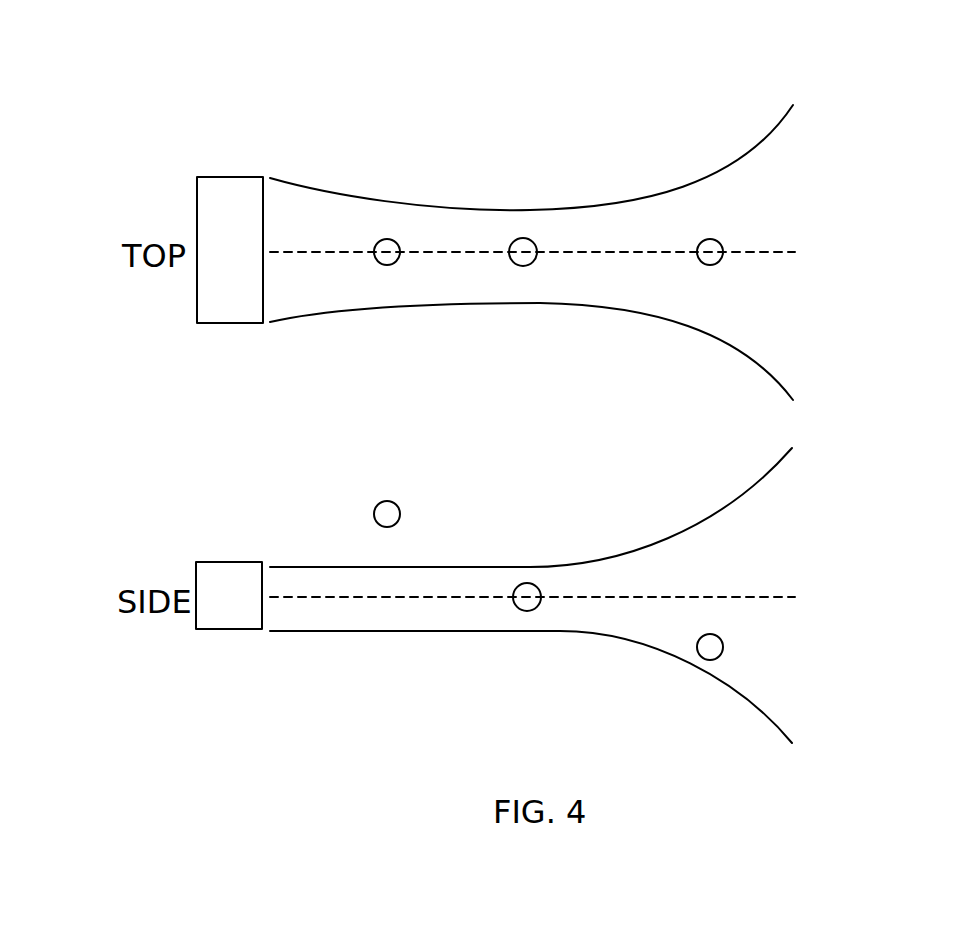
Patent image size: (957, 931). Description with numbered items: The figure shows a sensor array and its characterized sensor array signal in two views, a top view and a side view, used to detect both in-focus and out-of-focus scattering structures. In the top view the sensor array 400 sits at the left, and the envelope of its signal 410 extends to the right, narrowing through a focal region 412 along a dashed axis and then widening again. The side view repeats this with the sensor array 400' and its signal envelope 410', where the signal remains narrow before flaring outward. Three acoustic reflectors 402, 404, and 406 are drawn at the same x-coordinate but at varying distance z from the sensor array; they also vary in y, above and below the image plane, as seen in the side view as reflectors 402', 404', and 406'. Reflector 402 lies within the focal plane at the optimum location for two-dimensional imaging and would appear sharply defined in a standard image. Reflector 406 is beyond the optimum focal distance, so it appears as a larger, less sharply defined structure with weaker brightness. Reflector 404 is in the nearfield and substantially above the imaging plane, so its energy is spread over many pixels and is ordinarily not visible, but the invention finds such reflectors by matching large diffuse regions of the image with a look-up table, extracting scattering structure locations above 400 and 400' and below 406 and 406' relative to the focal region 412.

The sensor array 400 is at (206, 202).
The acoustic reflector 402 is at (490, 180).
The acoustic reflector 404 is at (350, 176).
The acoustic reflector 406 is at (769, 293).
The output beam 410 is at (599, 252).
The focal region 412 is at (455, 253).
The sensor array 400' is at (265, 668).
The acoustic reflector 402' is at (490, 525).
The acoustic reflector 404' is at (344, 447).
The acoustic reflector 406' is at (673, 579).
The output beam (side view) 410' is at (575, 595).